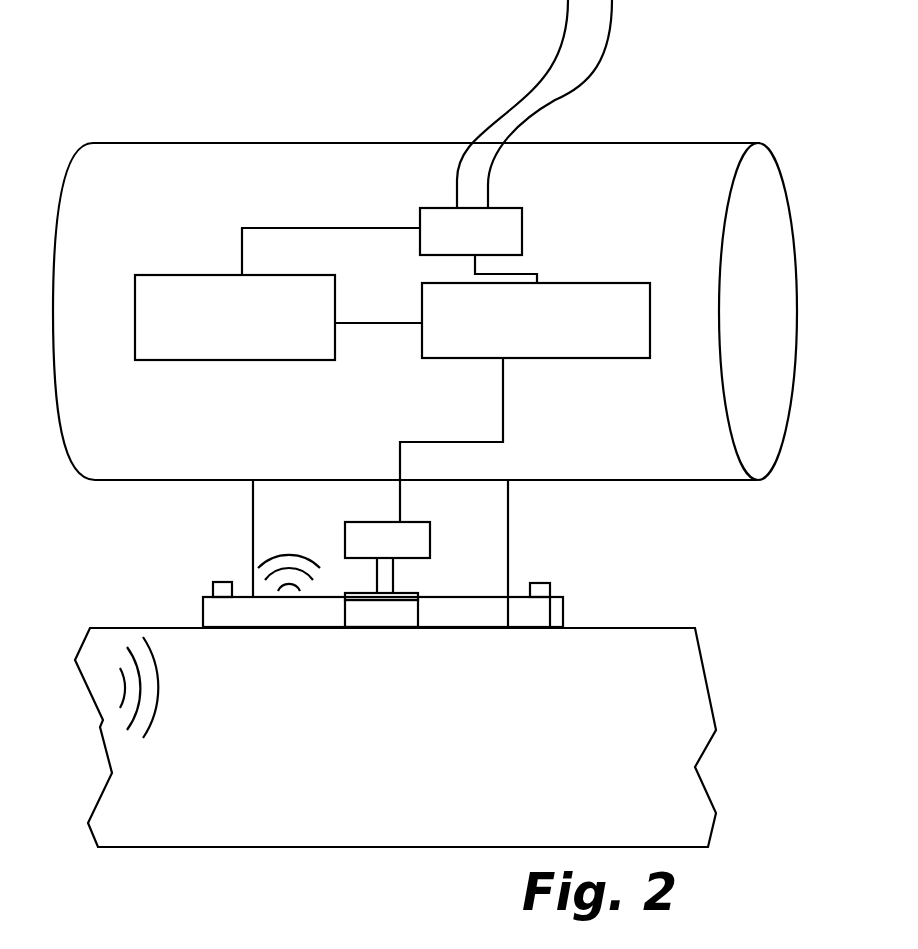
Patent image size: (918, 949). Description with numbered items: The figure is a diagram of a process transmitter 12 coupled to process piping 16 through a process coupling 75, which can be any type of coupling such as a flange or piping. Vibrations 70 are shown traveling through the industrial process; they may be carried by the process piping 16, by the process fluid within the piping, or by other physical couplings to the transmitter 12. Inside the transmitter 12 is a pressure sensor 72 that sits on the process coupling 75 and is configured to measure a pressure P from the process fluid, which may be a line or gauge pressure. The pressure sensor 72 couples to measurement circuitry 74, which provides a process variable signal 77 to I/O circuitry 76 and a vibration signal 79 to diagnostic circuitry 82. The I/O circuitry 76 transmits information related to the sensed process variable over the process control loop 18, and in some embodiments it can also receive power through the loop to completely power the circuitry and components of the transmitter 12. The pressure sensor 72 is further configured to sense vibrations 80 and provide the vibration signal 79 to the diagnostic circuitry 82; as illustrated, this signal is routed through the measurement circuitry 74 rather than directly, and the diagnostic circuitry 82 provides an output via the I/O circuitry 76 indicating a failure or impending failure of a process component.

The process transmitter 12 is at (125, 124).
The process piping 16 is at (600, 628).
The process control loop 18 is at (640, 62).
The vibrations 70 is at (178, 690).
The pressure sensor 72 is at (430, 543).
The measurement circuitry 74 is at (585, 347).
The process coupling 75 is at (203, 603).
The I/O circuitry 76 is at (512, 230).
The process variable signal 77 is at (535, 282).
The vibration signal 79 is at (360, 325).
The vibrations 80 is at (272, 572).
The diagnostic circuitry 82 is at (158, 285).
The pressure P is at (378, 642).